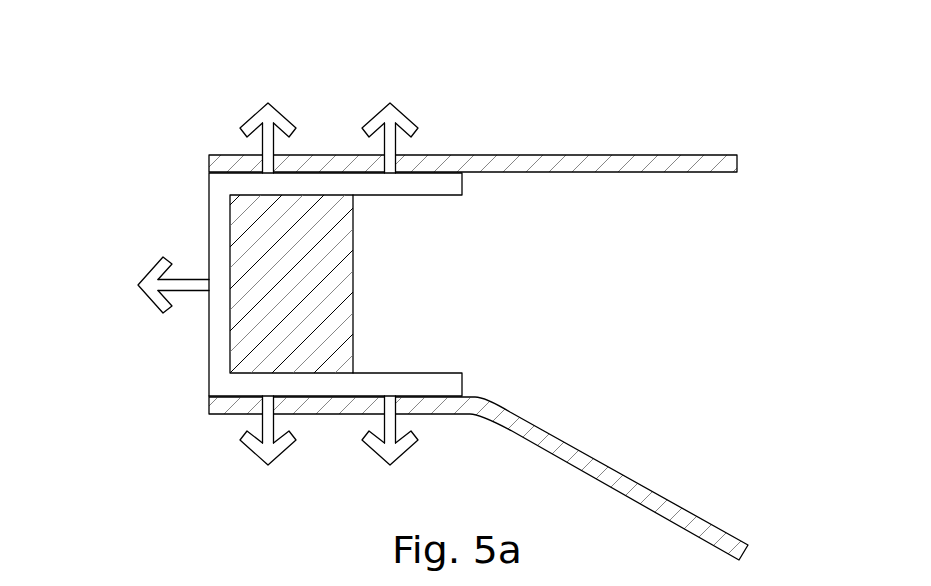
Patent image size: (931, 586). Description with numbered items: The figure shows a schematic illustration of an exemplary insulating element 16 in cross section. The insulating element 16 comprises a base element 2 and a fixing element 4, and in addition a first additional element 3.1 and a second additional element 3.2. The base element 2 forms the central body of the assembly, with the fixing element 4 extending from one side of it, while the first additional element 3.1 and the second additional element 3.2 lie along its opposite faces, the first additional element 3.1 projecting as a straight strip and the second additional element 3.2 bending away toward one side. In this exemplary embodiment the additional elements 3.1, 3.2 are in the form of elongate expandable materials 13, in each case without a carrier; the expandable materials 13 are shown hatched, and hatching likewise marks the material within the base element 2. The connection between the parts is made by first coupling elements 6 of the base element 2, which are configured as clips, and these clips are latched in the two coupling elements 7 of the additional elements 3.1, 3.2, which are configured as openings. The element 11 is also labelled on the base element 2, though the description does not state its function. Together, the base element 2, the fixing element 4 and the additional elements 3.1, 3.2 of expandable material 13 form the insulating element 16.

The base element 2 is at (209, 230).
The first additional element 3.1 is at (603, 163).
The second additional element 3.2 is at (597, 468).
The fixing element 4 is at (138, 285).
The first coupling elements 6 is at (273, 102).
The coupling elements of the additional elements 7 is at (287, 137).
The base wall 11 is at (425, 388).
The expandable materials 13 is at (345, 228).
The insulating element 16 is at (162, 113).